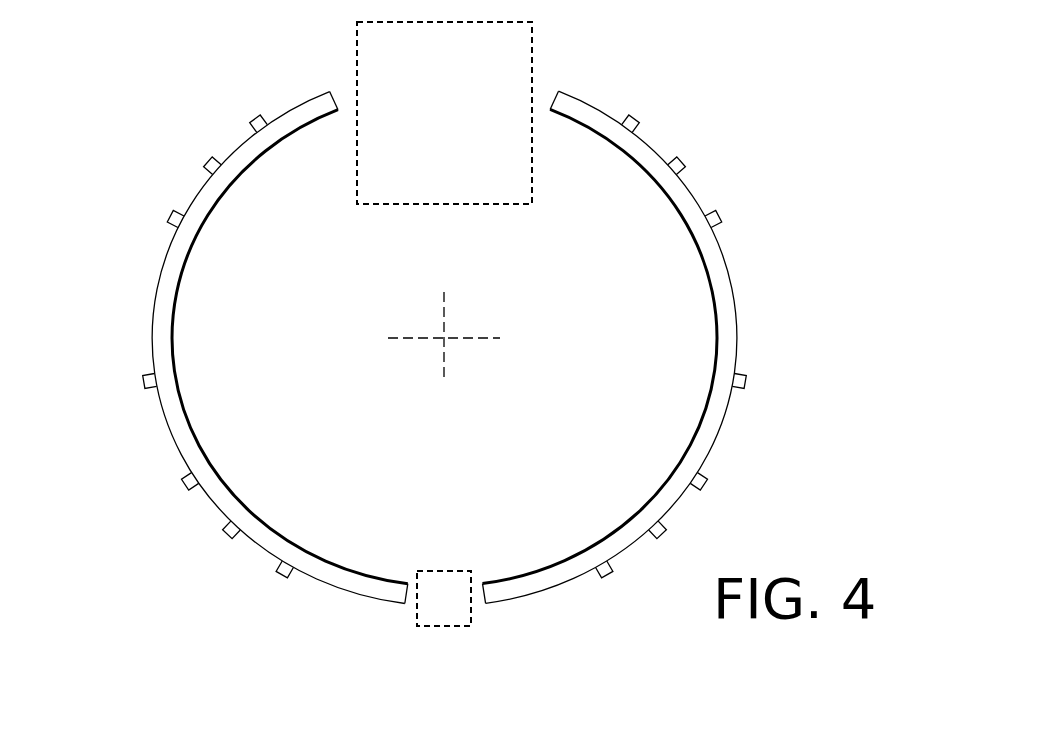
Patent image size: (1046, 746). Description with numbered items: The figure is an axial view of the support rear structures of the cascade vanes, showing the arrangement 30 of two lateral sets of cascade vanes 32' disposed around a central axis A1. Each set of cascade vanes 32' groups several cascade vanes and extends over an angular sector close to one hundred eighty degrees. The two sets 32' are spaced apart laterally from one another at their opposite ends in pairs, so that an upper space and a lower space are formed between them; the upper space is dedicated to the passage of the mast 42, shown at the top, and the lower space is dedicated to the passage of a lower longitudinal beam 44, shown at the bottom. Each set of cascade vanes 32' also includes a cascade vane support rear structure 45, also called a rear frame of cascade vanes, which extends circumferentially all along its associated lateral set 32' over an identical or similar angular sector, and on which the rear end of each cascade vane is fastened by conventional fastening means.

The stator assembly 30 is at (740, 100).
The set of cascade vanes 32' is at (441, 347).
The cascade vane support rear structure 45 is at (743, 245).
The mast 42 is at (515, 41).
The lower longitudinal beam 44 is at (457, 611).
The central axis A1 is at (445, 336).